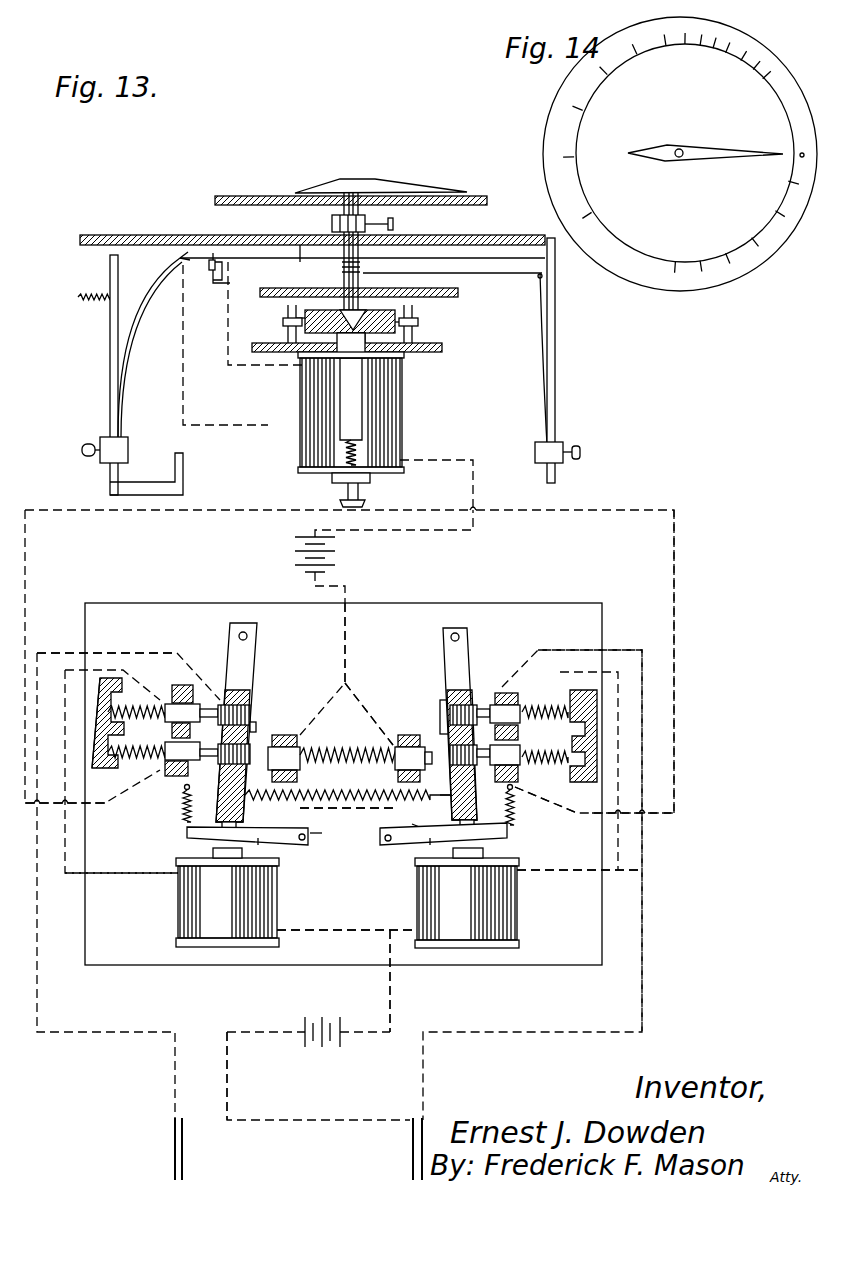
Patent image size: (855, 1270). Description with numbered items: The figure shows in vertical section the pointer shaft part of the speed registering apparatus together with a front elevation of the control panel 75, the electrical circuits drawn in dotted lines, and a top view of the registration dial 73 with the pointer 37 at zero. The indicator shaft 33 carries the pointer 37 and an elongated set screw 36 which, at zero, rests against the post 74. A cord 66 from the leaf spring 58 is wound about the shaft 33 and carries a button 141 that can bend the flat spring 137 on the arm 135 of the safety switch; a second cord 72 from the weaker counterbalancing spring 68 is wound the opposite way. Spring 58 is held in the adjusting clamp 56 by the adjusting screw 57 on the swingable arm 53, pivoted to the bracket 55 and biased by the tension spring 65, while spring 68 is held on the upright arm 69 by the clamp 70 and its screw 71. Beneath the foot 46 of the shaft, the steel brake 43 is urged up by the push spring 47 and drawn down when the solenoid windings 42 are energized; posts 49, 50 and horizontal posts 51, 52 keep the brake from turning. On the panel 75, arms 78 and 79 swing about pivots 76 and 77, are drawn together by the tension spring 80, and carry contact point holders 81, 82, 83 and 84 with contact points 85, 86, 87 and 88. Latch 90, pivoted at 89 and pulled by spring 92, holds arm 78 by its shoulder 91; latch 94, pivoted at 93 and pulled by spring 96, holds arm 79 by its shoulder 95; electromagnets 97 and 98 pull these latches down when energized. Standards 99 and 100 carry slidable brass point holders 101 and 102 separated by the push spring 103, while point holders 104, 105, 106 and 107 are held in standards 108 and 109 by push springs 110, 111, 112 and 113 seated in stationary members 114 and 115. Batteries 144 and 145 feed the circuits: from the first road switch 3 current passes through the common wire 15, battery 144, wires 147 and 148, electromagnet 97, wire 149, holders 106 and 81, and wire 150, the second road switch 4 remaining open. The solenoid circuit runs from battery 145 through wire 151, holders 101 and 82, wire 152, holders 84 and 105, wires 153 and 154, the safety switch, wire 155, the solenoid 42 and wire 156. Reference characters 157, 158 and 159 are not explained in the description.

In FIG. 13, the pointer or indicator arm 37 is at (412, 188).
In FIG. 14, the pointer or indicator arm 37 is at (714, 150).
In FIG. 13, the indicator shaft 33 is at (360, 258).
In FIG. 13, the elongated set screw 36 is at (400, 226).
In FIG. 13, the post 74 is at (392, 220).
In FIG. 13, the cord or flexible wire 66 is at (255, 258).
In FIG. 13, the button 141 is at (298, 250).
In FIG. 13, the cord or wire 72 is at (490, 273).
In FIG. 13, the extending arm 135 is at (222, 272).
In FIG. 13, the flat spring 137 is at (209, 270).
In FIG. 13, the tension spring 65 is at (76, 297).
In FIG. 13, the swingable arm 53 is at (110, 309).
In FIG. 13, the leaf spring 58 is at (131, 350).
In FIG. 13, the adjusting screw 57 is at (85, 443).
In FIG. 13, the adjusting clamp 56 is at (110, 450).
In FIG. 13, the metal angle or bracket 55 is at (183, 462).
In FIG. 13, the wire 154 is at (183, 407).
In FIG. 13, the wire 155 is at (245, 366).
In FIG. 13, the wire 156 is at (455, 458).
In FIG. 13, the cone-shaped foot 46 is at (305, 315).
In FIG. 13, the horizontal post 52 is at (270, 311).
In FIG. 13, the upstanding post 50 is at (284, 333).
In FIG. 13, the upstanding post 49 is at (416, 335).
In FIG. 13, the horizontal post 51 is at (418, 322).
In FIG. 13, the steel brake member 43 is at (400, 365).
In FIG. 13, the solenoid windings 42 is at (402, 390).
In FIG. 13, the coiled push spring 47 is at (332, 455).
In FIG. 13, the counterbalancing spring 68 is at (551, 331).
In FIG. 13, the upright arm 69 is at (556, 358).
In FIG. 13, the adjustable clamp 70 is at (552, 446).
In FIG. 13, the adjusting screw 71 is at (581, 449).
In FIG. 13, the storage battery 145 is at (300, 553).
In FIG. 13, the control panel or board 75 is at (595, 940).
In FIG. 13, the wire 150 is at (145, 652).
In FIG. 13, the stationary member 115 is at (92, 690).
In FIG. 13, the coil push spring 113 is at (100, 768).
In FIG. 13, the coil push spring 112 is at (132, 700).
In FIG. 13, the stationary standard 109 is at (160, 775).
In FIG. 13, the point holder 106 is at (178, 700).
In FIG. 13, the point holder 107 is at (177, 765).
In FIG. 13, the pivot 76 is at (248, 636).
In FIG. 13, the swingable arm 78 is at (246, 650).
In FIG. 13, the contact point holder 81 is at (235, 700).
In FIG. 13, the contact point 85 is at (222, 700).
In FIG. 13, the contact point 86 is at (218, 762).
In FIG. 13, the contact point holder 82 is at (252, 725).
In FIG. 13, the standard 99 is at (287, 745).
In FIG. 13, the brass contact point holder 101 is at (350, 736).
In FIG. 13, the wire 151 is at (345, 655).
In FIG. 13, the conductor 159 is at (375, 705).
In FIG. 13, the brass contact point holder 102 is at (407, 745).
In FIG. 13, the standard 100 is at (440, 718).
In FIG. 13, the push coil spring 103 is at (348, 784).
In FIG. 13, the pivot 77 is at (460, 635).
In FIG. 13, the swingable arm 79 is at (446, 645).
In FIG. 13, the contact point holder 83 is at (450, 700).
In FIG. 13, the contact point 87 is at (480, 700).
In FIG. 13, the contact point 88 is at (475, 746).
In FIG. 13, the point holder 104 is at (560, 668).
In FIG. 13, the point holder 105 is at (505, 770).
In FIG. 13, the coil push spring 110 is at (548, 708).
In FIG. 13, the coil push spring 111 is at (555, 770).
In FIG. 13, the stationary member 114 is at (597, 694).
In FIG. 13, the stationary standard 108 is at (565, 810).
In FIG. 13, the wire 153 is at (676, 719).
In FIG. 13, the conductor 158 is at (622, 650).
In FIG. 13, the tension spring 92 is at (183, 810).
In FIG. 13, the tension spring 96 is at (515, 825).
In FIG. 13, the shoulder 91 is at (192, 838).
In FIG. 13, the pivot 89 is at (312, 845).
In FIG. 13, the steel armature latch 90 is at (258, 848).
In FIG. 13, the wire 152 is at (322, 833).
In FIG. 13, the coil tension spring 80 is at (367, 805).
In FIG. 13, the shoulder 95 is at (426, 815).
In FIG. 13, the contact point holder 84 is at (465, 785).
In FIG. 13, the pivot 93 is at (392, 845).
In FIG. 13, the steel armature latch 94 is at (430, 848).
In FIG. 13, the electromagnet 97 is at (195, 912).
In FIG. 13, the electromagnet 98 is at (497, 899).
In FIG. 13, the wire 149 is at (121, 885).
In FIG. 13, the wire 148 is at (325, 933).
In FIG. 13, the conductor 157 is at (614, 872).
In FIG. 13, the storage battery 144 is at (318, 1012).
In FIG. 13, the wire 147 is at (392, 992).
In FIG. 13, the common wire 15 is at (229, 1067).
In FIG. 13, the first road switch 3 is at (175, 1136).
In FIG. 13, the second road switch 4 is at (413, 1138).
In FIG. 14, the registration dial 73 is at (548, 116).